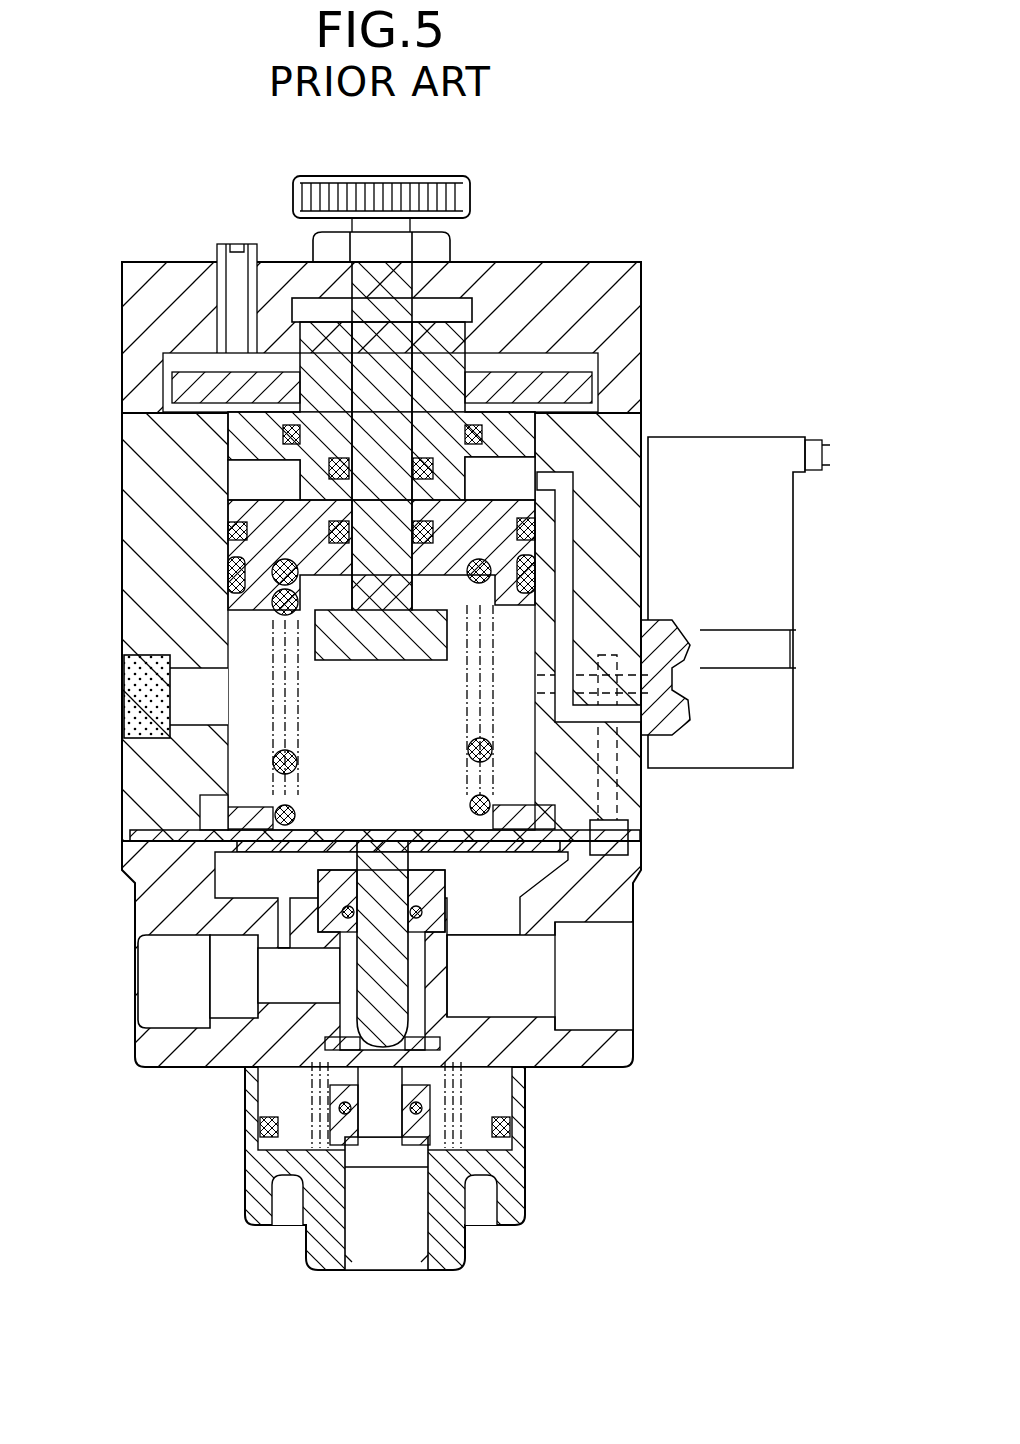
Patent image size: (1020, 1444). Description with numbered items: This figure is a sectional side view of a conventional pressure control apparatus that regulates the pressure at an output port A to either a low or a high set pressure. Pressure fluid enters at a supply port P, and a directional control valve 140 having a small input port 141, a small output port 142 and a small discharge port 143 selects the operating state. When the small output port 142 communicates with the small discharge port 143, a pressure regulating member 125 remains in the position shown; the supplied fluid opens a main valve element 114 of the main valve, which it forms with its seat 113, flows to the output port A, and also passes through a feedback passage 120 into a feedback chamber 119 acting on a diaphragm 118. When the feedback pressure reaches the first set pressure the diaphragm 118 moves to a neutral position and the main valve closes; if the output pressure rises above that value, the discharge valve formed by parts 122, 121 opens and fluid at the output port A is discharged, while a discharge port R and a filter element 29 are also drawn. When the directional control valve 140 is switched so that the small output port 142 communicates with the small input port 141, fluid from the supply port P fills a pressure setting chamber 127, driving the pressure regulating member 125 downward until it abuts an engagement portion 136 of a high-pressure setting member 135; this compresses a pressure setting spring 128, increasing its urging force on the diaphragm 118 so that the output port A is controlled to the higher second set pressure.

The high-pressure setting member 135 is at (393, 287).
The directional control valve 140 is at (812, 537).
The pressure setting chamber 127 is at (240, 478).
The pressure regulating member 125 is at (235, 556).
The small input port 141 is at (660, 640).
The small discharge port 143 is at (665, 680).
The filter 29 is at (185, 710).
The engagement portion 136 is at (363, 662).
The pressure setting spring 128 is at (470, 752).
The small output port 142 is at (673, 715).
The diaphragm 118 is at (232, 882).
The feedback chamber 119 is at (235, 878).
The discharge valve element 122 is at (365, 1013).
The discharge valve seat 121 is at (425, 1012).
The feedback passage 120 is at (287, 952).
The main valve seat 113 is at (300, 1085).
The main valve element 114 is at (290, 1135).
The output port A is at (160, 963).
The supply port P is at (608, 980).
The exhaust port R is at (388, 1235).